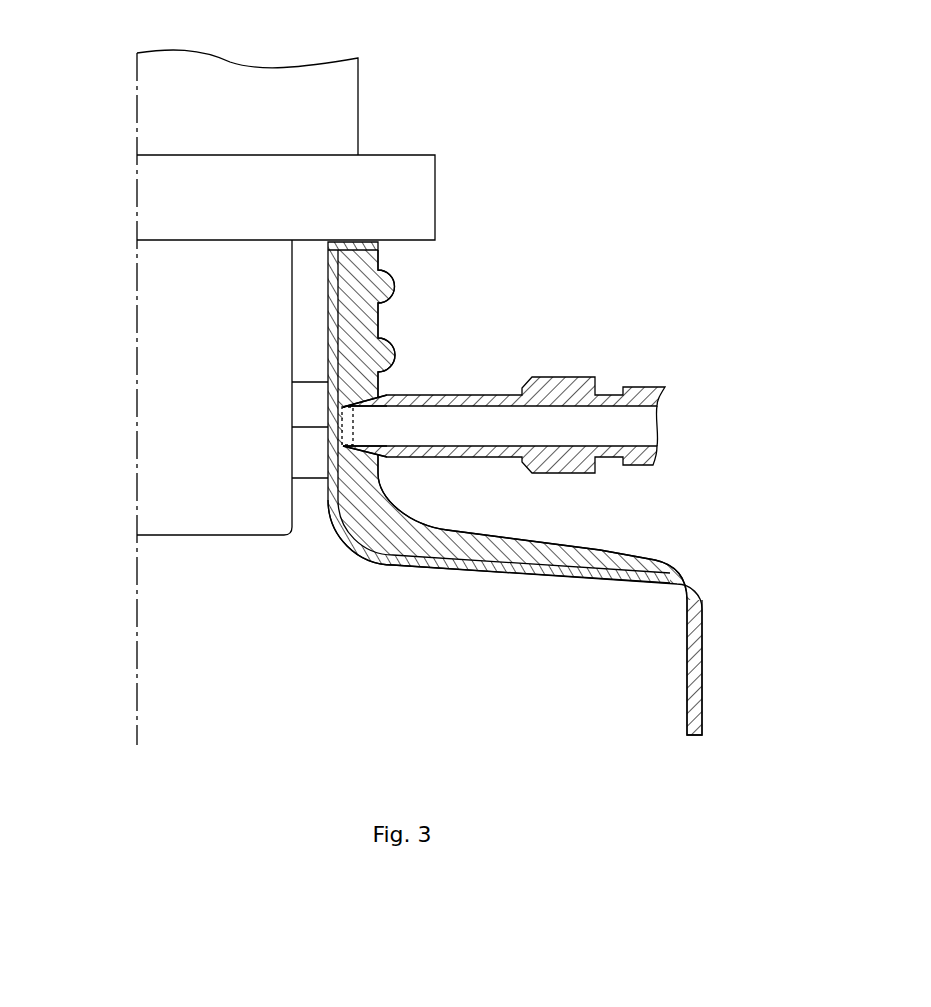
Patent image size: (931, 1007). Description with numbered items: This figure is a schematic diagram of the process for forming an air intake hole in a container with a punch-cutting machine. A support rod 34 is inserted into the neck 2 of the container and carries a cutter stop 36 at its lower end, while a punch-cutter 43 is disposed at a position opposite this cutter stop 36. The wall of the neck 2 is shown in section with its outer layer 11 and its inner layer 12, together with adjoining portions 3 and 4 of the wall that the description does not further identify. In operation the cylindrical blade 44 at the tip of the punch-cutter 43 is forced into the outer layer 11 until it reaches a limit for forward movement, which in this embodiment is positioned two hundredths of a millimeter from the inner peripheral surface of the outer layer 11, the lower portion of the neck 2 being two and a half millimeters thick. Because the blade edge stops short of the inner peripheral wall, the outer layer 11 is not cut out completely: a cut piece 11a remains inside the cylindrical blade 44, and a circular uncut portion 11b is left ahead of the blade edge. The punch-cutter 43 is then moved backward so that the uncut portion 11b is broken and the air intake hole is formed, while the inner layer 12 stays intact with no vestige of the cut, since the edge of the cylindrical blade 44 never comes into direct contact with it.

The neck 2 is at (353, 293).
The sheet member 3 is at (547, 543).
The leg portion 4 is at (693, 685).
The outer layer 11 is at (443, 548).
The cut piece 11a is at (372, 420).
The uncut portion 11b is at (340, 427).
The inner layer 12 is at (433, 567).
The support rod 34 is at (172, 473).
The cutter stop 36 is at (310, 452).
The punch-cutter 43 is at (588, 359).
The cylindrical blade 44 is at (377, 402).